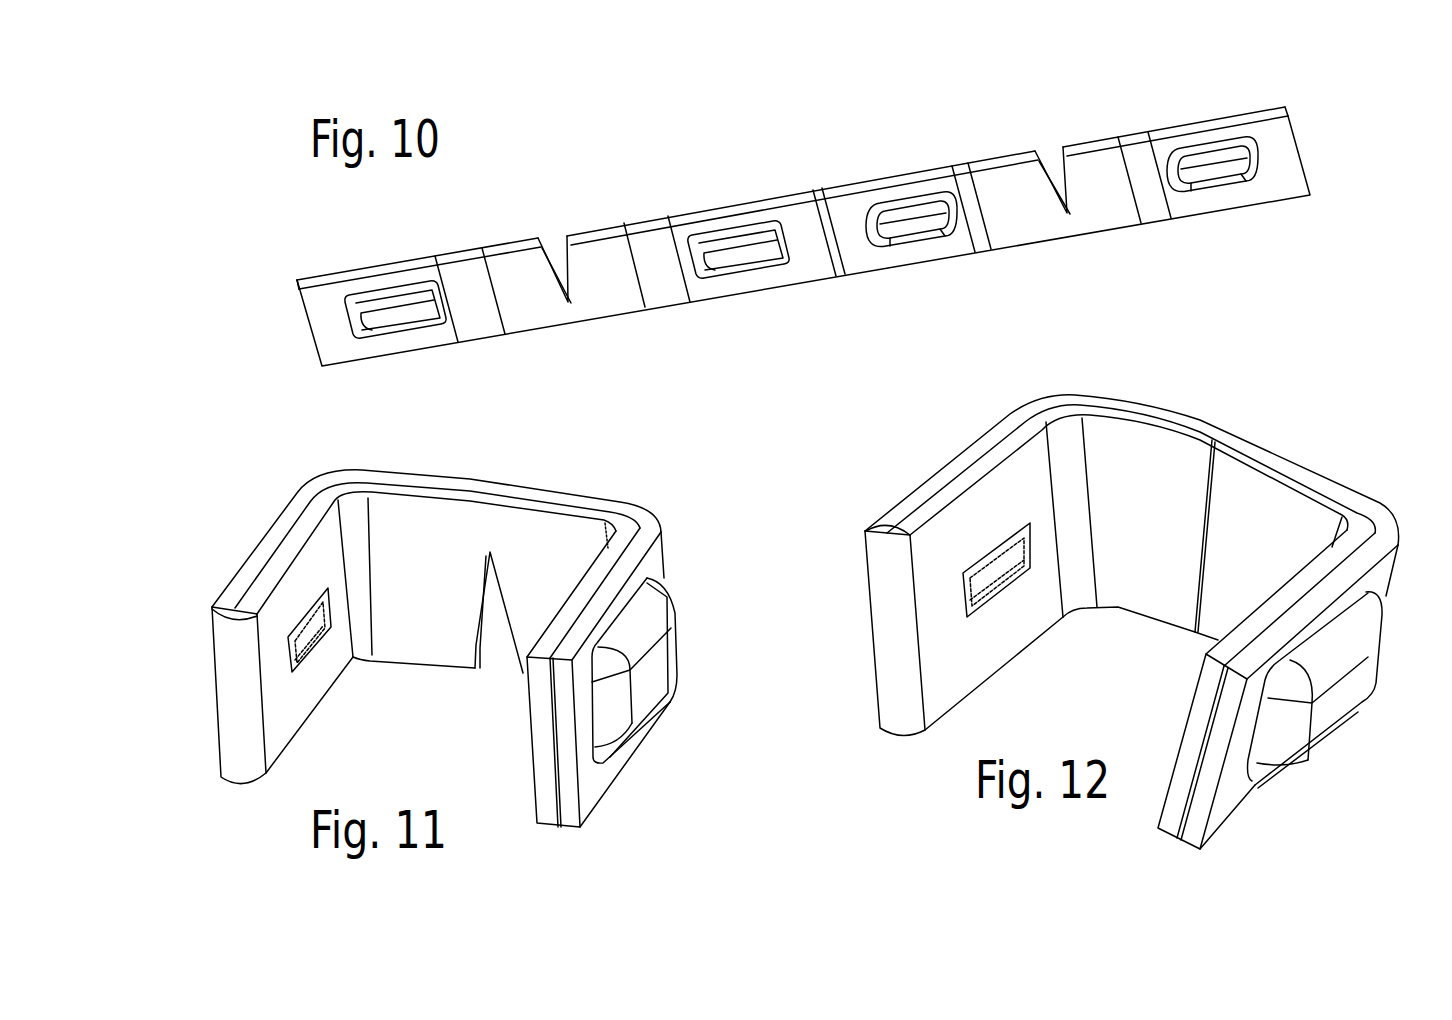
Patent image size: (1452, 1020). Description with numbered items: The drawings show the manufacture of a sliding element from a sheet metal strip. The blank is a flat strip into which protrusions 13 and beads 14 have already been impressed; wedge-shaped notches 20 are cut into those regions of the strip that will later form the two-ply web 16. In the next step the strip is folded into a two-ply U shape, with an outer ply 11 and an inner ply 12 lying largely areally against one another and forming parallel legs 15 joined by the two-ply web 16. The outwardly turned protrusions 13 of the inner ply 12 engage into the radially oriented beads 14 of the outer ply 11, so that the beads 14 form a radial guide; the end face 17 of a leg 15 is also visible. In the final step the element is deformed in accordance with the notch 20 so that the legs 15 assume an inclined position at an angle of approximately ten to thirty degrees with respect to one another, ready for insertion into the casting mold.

In FIG. 11, the outer ply 11 is at (253, 570).
In FIG. 12, the outer ply 11 is at (912, 502).
In FIG. 11, the inner ply 12 is at (547, 807).
In FIG. 12, the inner ply 12 is at (1288, 600).
In FIG. 10, the protrusion 13 is at (1205, 177).
In FIG. 11, the protrusion 13 is at (307, 645).
In FIG. 12, the protrusion 13 is at (988, 587).
In FIG. 10, the bead 14 is at (745, 260).
In FIG. 11, the bead 14 is at (648, 668).
In FIG. 12, the bead 14 is at (1328, 712).
In FIG. 11, the leg 15 is at (256, 539).
In FIG. 12, the leg 15 is at (928, 458).
In FIG. 11, the web 16 is at (502, 478).
In FIG. 12, the web 16 is at (1262, 415).
In FIG. 11, the end face of the leg 17 is at (243, 762).
In FIG. 12, the end face of the leg 17 is at (883, 607).
In FIG. 10, the wedge-shaped notch 20 is at (556, 266).
In FIG. 11, the wedge-shaped notch 20 is at (500, 640).